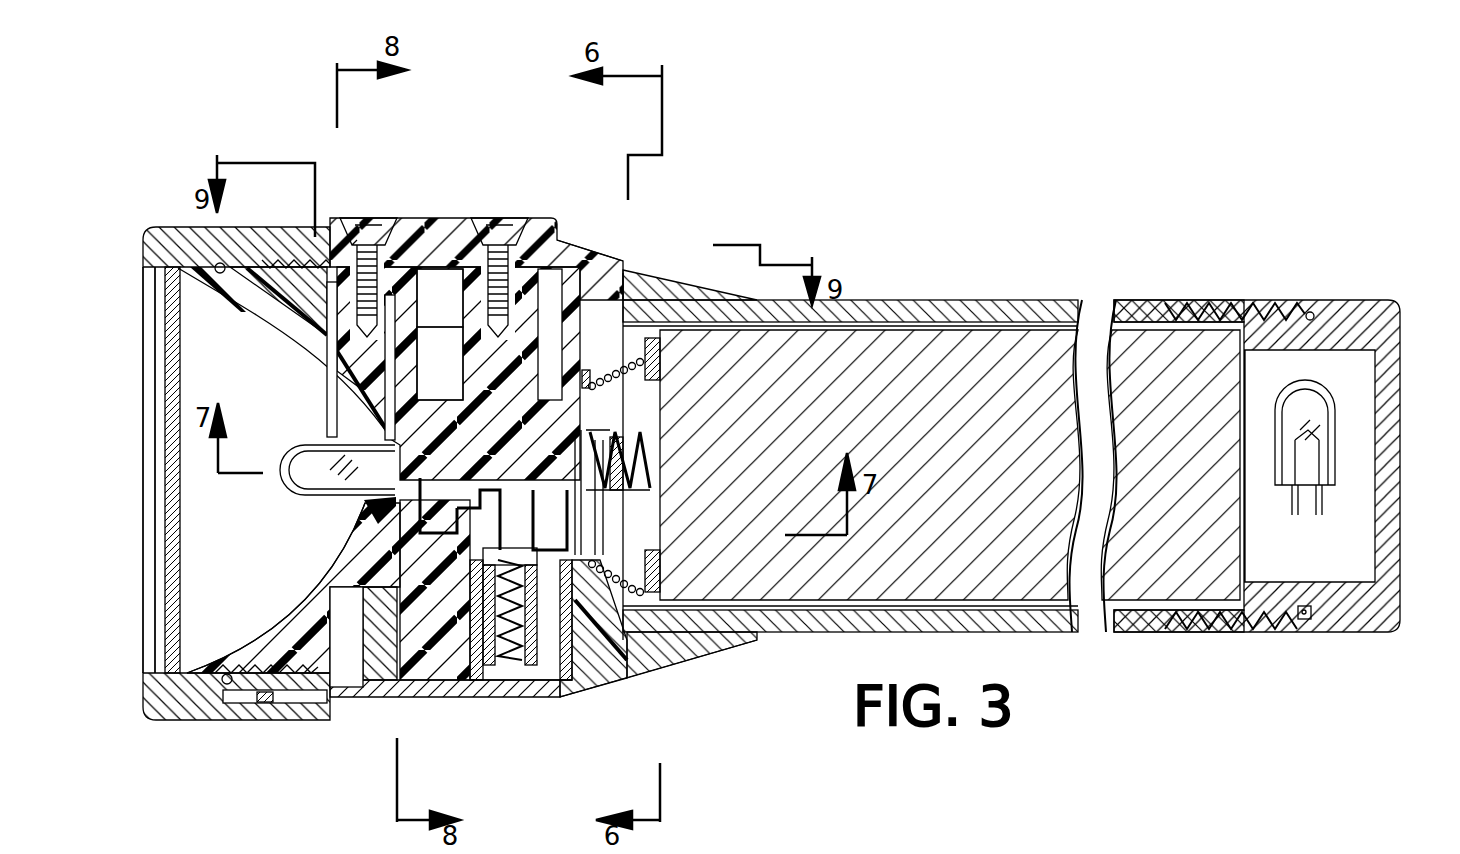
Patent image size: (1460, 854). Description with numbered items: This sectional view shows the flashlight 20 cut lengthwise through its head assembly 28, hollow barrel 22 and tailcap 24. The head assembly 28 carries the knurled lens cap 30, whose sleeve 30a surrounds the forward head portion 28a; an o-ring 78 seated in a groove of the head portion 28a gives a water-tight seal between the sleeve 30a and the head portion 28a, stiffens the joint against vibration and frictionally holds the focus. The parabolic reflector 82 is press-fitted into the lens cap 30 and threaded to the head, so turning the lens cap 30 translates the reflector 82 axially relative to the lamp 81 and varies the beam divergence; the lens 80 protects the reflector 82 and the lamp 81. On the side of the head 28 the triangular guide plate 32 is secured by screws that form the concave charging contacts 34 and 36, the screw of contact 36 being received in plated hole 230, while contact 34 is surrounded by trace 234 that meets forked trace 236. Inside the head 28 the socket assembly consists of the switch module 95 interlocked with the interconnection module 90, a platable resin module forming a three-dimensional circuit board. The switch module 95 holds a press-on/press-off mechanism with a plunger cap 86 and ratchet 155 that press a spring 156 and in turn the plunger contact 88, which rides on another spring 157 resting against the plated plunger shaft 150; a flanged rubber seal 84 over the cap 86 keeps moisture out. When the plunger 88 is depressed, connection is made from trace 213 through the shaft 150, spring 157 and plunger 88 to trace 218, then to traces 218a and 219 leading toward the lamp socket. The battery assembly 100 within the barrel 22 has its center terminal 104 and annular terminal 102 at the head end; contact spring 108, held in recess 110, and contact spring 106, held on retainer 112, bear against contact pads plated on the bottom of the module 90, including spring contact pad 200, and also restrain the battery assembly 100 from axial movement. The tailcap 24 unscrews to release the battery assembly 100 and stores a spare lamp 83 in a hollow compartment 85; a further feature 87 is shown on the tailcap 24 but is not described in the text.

The flashlight 20 is at (941, 228).
The barrel housing 22 is at (637, 262).
The tailcap 24 is at (1340, 298).
The head assembly 28 is at (377, 717).
The head portion 28a is at (388, 697).
The lens cap 30 is at (183, 722).
The sleeve 30a is at (303, 722).
The triangular guide plate 32 is at (557, 222).
The charging contact 34 is at (360, 222).
The charging contact 36 is at (512, 220).
The o-ring 78 is at (268, 722).
The lens 80 is at (143, 452).
The lamp 81 is at (320, 440).
The parabolic reflector 82 is at (286, 340).
The spare lamp 83 is at (1340, 430).
The flanged rubber seal 84 is at (473, 590).
The hollow compartment 85 is at (1305, 467).
The plunger cap 86 is at (592, 682).
The tail cap contact 87 is at (1305, 619).
The plunger contact 88 is at (556, 690).
The interconnection module 90 is at (507, 423).
The switch module 95 is at (432, 615).
The battery assembly 100 is at (945, 438).
The annular battery terminal 102 is at (666, 296).
The center battery terminal 104 is at (665, 443).
The contact spring 106 is at (652, 380).
The contact spring 108 is at (640, 485).
The contact spring recess 110 is at (660, 462).
The contact spring retainer 112 is at (662, 388).
The plunger shaft 150 is at (495, 557).
The ratchet 155 is at (523, 652).
The spring 156 is at (470, 640).
The spring 157 is at (505, 667).
The spring contact pad 200 is at (588, 370).
The trace 213 is at (575, 525).
The trace 218 is at (493, 520).
The trace 218a is at (430, 518).
The trace 219 is at (372, 500).
The plated hole 230 is at (566, 250).
The trace 234 is at (412, 292).
The forked trace 236 is at (410, 345).